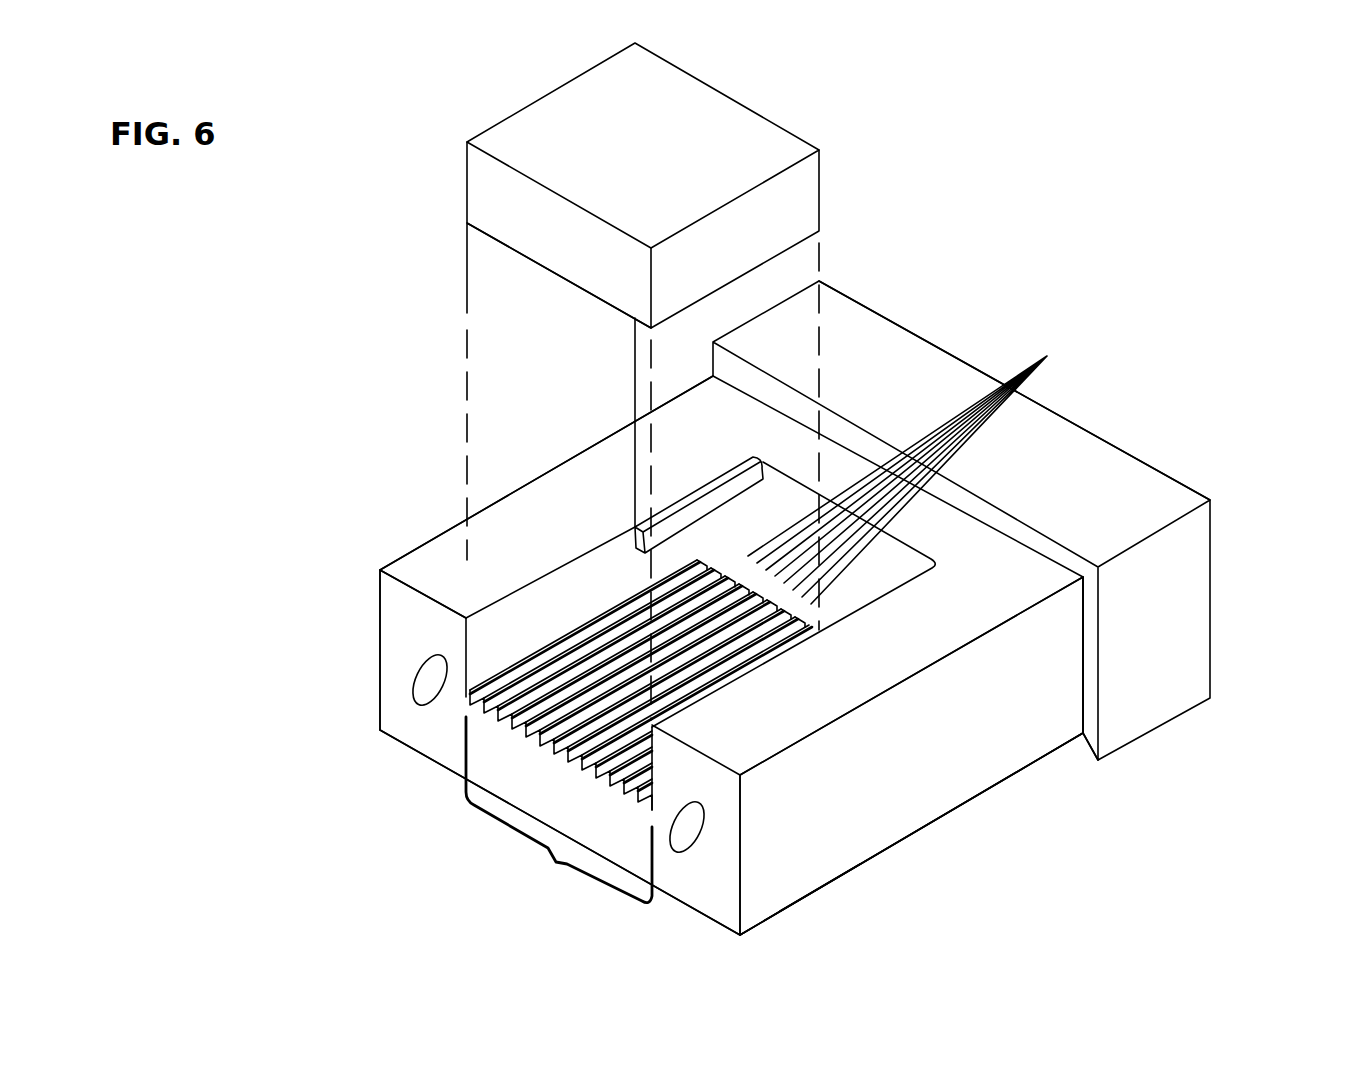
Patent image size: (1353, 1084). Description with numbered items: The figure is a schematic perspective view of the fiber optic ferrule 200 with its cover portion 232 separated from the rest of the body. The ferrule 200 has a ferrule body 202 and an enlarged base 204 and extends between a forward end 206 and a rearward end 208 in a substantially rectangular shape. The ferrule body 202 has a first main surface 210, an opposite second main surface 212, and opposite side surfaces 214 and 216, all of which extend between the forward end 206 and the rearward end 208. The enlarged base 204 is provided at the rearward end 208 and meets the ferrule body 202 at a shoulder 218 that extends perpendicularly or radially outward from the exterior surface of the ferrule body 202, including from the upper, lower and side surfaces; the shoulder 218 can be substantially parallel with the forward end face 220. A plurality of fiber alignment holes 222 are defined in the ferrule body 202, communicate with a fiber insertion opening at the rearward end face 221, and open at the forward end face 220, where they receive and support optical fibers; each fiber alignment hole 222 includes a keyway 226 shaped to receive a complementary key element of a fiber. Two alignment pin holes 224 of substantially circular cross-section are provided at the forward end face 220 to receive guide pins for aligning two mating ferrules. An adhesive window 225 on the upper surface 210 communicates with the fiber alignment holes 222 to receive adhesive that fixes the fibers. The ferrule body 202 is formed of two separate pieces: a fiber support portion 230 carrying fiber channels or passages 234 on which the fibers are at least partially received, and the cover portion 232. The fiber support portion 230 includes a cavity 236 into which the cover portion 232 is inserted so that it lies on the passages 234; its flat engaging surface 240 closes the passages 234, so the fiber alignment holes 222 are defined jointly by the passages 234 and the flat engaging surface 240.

The ferrule 200 is at (1192, 207).
The ferrule body 202 is at (496, 455).
The enlarged base 204 is at (862, 290).
The forward end 206 is at (826, 900).
The rearward end 208 is at (1165, 740).
The first main surface 210 is at (584, 474).
The second main surface 212 is at (864, 872).
The side surface 214 is at (928, 798).
The side surface 216 is at (427, 543).
The shoulder 218 is at (1088, 748).
The forward end face 220 is at (442, 742).
The rearward end face 221 is at (1141, 458).
The fiber alignment holes 222 is at (632, 803).
The alignment pin holes 224 is at (425, 673).
The adhesive window 225 is at (776, 538).
The keyway 226 is at (638, 804).
The fiber support portion 230 is at (580, 668).
The cover portion 232 is at (527, 218).
The fiber channels or passages 234 is at (608, 782).
The cavity 236 is at (490, 688).
The flat engaging surface 240 is at (526, 258).